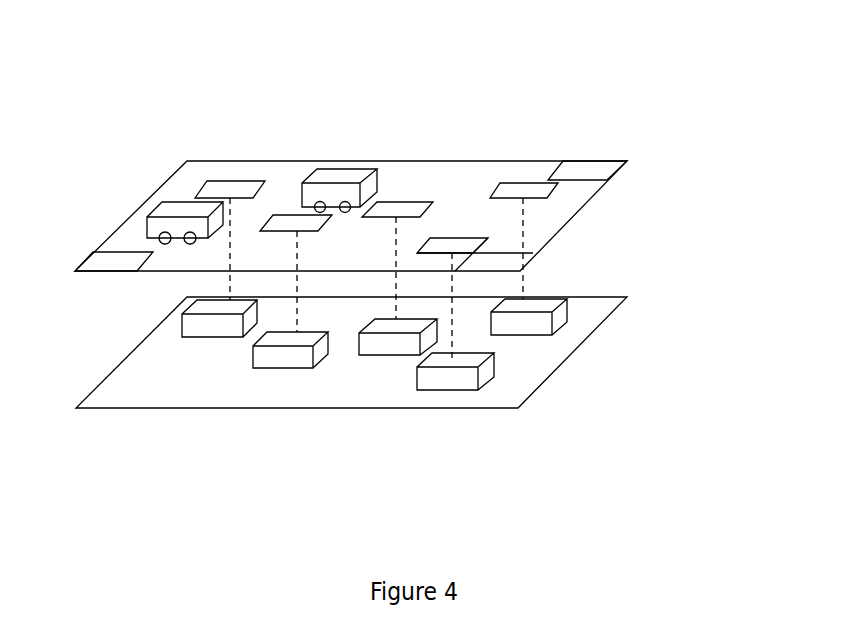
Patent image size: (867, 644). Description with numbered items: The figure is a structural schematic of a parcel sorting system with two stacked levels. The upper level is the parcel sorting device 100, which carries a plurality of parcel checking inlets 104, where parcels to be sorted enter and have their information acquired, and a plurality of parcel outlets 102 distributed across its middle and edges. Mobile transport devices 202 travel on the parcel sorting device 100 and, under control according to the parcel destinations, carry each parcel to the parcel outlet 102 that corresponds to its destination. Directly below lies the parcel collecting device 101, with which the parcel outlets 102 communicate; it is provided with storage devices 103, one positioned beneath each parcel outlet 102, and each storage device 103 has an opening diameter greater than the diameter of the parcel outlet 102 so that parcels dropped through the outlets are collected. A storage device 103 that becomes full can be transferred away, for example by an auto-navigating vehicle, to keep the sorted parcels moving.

The parcel sorting device 100 is at (428, 188).
The parcel collecting device 101 is at (601, 312).
The parcel outlet 102 is at (241, 190).
The storage device 103 is at (473, 358).
The parcel checking inlet 104 is at (597, 175).
The mobile transport device 202 is at (214, 222).